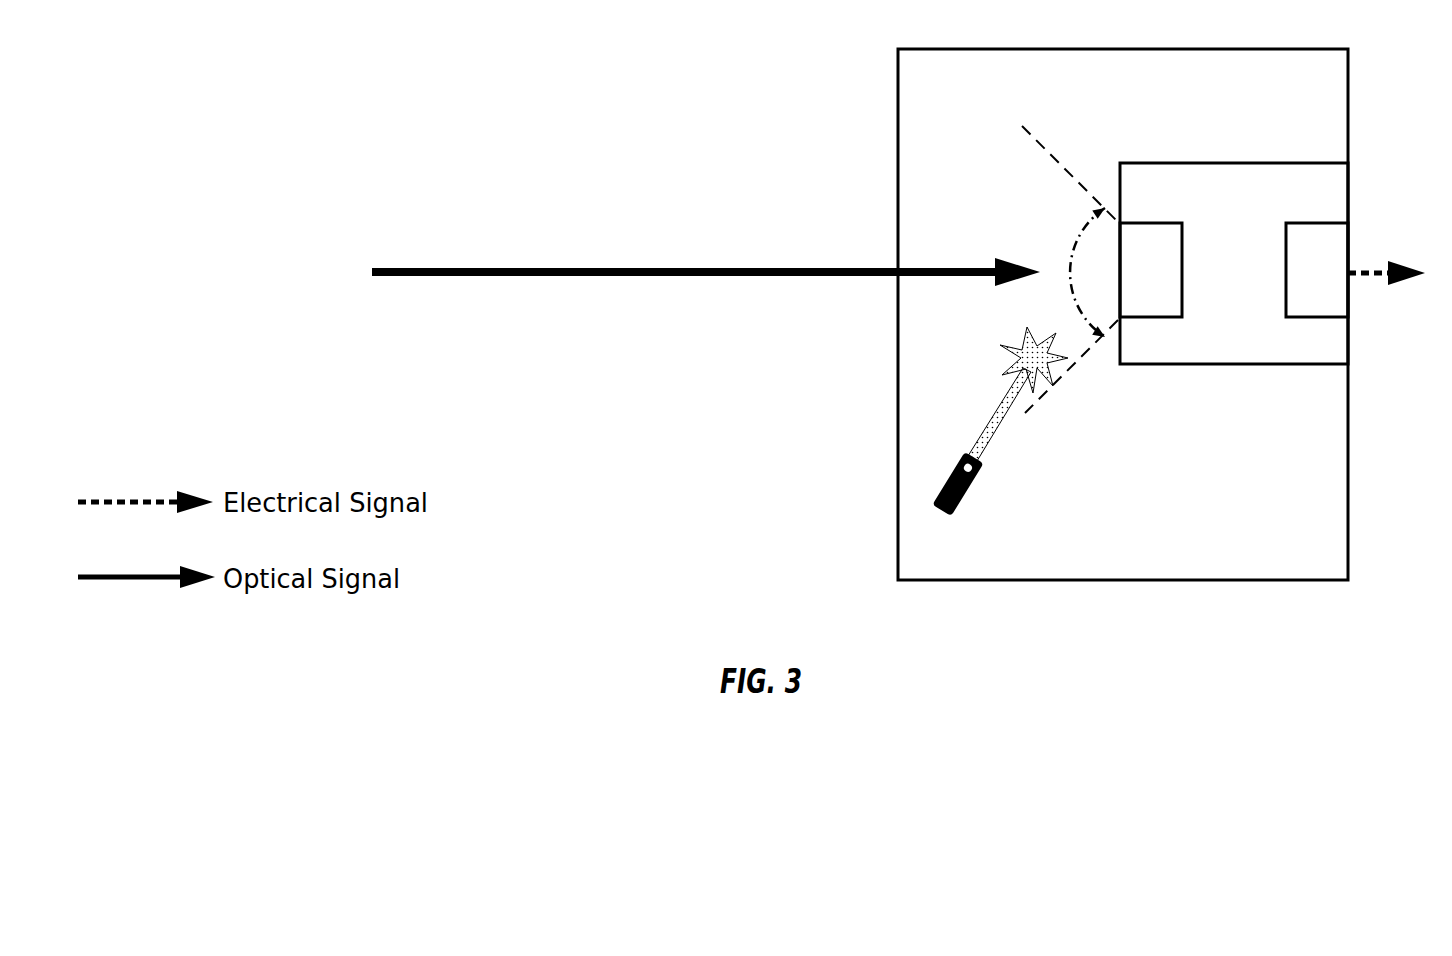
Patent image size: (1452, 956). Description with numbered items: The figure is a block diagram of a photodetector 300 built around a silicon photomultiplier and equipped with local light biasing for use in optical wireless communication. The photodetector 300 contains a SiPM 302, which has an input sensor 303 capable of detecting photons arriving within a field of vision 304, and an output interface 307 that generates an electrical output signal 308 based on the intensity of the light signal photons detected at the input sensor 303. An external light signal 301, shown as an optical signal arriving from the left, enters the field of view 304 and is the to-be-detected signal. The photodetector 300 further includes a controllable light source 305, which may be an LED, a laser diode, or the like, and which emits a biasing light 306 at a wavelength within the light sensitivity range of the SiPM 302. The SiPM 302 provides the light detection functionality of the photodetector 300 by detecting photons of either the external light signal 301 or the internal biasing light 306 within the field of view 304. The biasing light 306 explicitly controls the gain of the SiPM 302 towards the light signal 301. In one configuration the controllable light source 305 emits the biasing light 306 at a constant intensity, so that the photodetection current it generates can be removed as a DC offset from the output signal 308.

The photodetector 300 is at (1217, 555).
The light signal 301 is at (640, 253).
The SiPM 302 is at (1223, 163).
The input sensor 303 is at (1152, 222).
The field of vision 304 is at (1081, 240).
The controllable light source 305 is at (962, 505).
The biasing light 306 is at (990, 434).
The output interface 307 is at (1320, 224).
The output signal 308 is at (1358, 272).